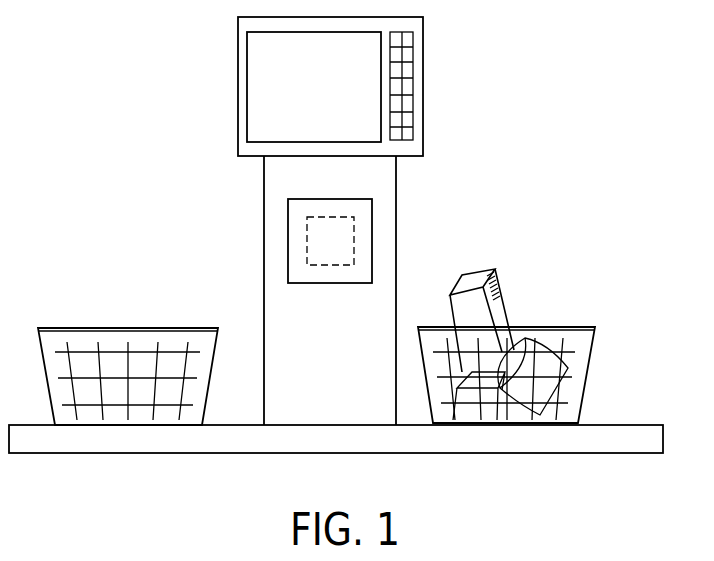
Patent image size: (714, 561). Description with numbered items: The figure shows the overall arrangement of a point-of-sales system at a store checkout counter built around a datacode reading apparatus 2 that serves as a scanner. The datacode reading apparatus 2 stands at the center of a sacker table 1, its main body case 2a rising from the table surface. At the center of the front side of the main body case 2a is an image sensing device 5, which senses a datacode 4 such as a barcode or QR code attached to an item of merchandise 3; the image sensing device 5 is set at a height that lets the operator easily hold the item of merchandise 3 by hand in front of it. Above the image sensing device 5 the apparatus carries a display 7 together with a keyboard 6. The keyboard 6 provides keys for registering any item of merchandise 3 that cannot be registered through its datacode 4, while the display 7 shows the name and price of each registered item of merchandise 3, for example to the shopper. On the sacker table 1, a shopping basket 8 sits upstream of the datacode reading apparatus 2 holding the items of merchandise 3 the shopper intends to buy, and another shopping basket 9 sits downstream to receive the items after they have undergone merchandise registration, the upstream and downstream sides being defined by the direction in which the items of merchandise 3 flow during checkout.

The sacker table 1 is at (632, 432).
The datacode reading apparatus 2 is at (404, 180).
The main body case 2a is at (393, 212).
The item of merchandise 3 is at (478, 278).
The datacode 4 is at (500, 302).
The image sensing device 5 is at (307, 234).
The keyboard 6 is at (413, 63).
The display 7 is at (250, 84).
The shopping basket 8 is at (595, 328).
The shopping basket 9 is at (86, 327).